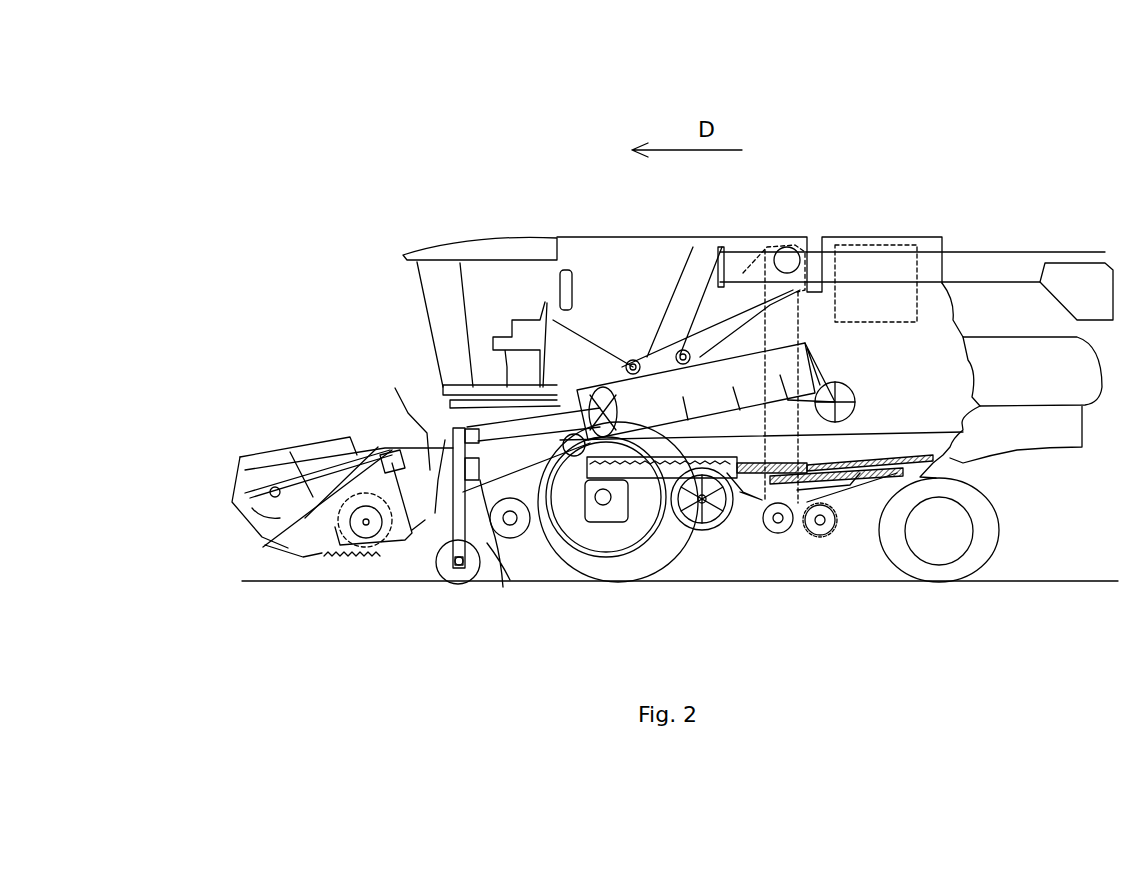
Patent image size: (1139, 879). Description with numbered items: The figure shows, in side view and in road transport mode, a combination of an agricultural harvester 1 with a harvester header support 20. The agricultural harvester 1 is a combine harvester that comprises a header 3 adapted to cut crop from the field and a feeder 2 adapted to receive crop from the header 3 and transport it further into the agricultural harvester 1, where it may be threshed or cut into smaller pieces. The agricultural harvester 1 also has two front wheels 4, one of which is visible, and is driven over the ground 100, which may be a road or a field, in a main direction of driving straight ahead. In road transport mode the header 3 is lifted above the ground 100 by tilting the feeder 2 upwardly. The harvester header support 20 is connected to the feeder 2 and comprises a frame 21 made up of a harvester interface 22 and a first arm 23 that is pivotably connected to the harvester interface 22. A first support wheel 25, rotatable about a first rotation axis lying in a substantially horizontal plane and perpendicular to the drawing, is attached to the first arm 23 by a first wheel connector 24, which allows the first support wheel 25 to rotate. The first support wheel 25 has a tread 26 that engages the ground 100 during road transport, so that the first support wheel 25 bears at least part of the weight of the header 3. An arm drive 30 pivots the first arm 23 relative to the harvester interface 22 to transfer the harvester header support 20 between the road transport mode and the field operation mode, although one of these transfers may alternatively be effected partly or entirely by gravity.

The agricultural harvester 1 is at (455, 185).
The feeder 2 is at (478, 427).
The header 3 is at (252, 473).
The front wheels 4 is at (562, 557).
The harvester header support 20 is at (450, 502).
The frame 21 is at (452, 426).
The harvester interface 22 is at (462, 428).
The first arm 23 is at (435, 513).
The first wheel connector 24 is at (512, 540).
The first support wheel 25 is at (458, 567).
The tread 26 is at (440, 545).
The arm drive 30 is at (523, 577).
The ground 100 is at (1015, 583).